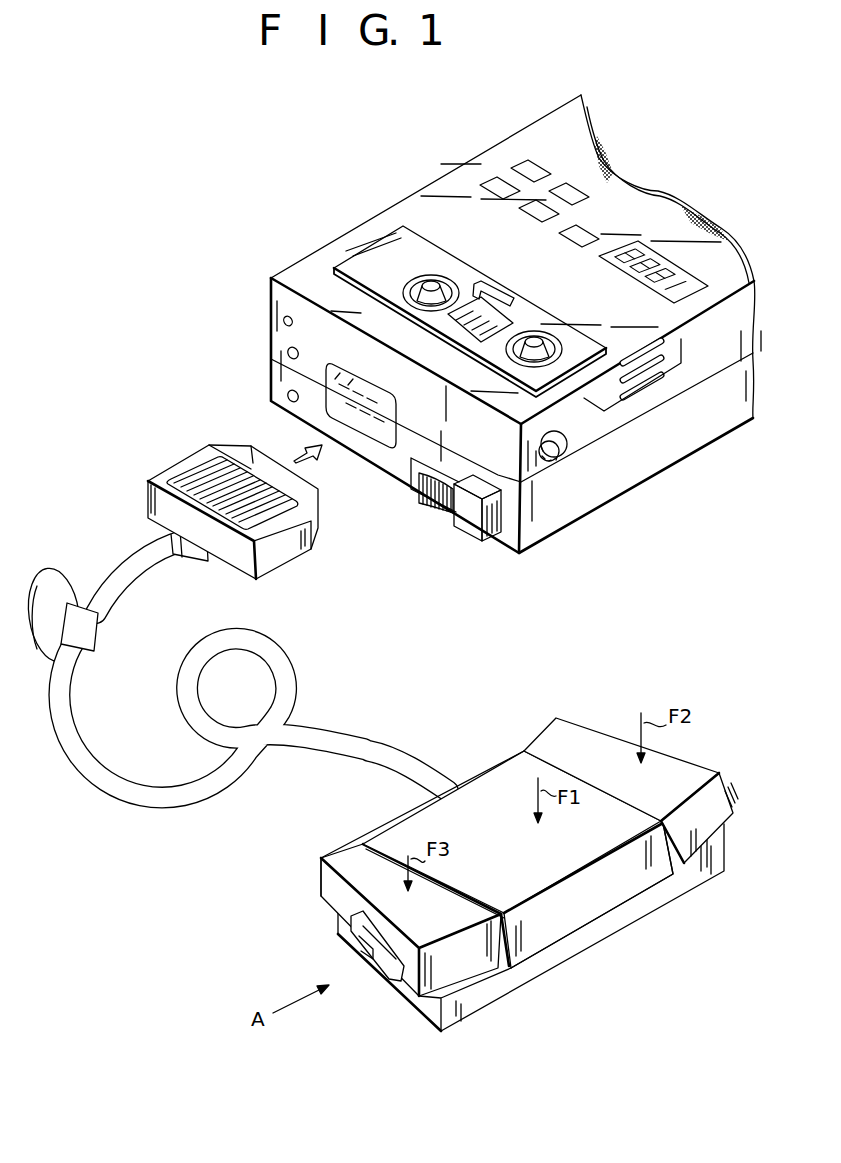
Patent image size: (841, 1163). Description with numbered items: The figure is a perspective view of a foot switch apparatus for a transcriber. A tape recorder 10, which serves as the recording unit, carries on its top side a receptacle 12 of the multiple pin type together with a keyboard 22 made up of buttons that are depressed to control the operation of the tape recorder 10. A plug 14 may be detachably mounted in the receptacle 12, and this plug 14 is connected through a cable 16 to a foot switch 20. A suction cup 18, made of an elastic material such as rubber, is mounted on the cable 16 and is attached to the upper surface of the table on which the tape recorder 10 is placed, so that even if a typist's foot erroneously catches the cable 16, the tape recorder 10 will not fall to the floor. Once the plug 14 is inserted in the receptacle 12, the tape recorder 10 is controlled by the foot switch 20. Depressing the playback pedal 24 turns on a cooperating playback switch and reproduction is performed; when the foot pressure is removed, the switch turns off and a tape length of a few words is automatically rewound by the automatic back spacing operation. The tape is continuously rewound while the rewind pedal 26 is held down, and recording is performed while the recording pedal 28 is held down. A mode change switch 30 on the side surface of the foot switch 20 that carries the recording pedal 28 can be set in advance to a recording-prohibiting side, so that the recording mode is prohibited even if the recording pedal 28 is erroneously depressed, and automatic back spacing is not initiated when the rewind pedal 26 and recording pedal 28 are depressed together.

The tape recorder 10 is at (665, 443).
The receptacle 12 is at (329, 372).
The plug 14 is at (290, 543).
The cable 16 is at (107, 748).
The suction cup 18 is at (88, 585).
The foot switch 20 is at (608, 945).
The keyboard 22 is at (528, 153).
The playback pedal 24 is at (552, 930).
The rewind pedal 26 is at (703, 833).
The recording pedal 28 is at (470, 967).
The mode change switch 30 is at (358, 958).